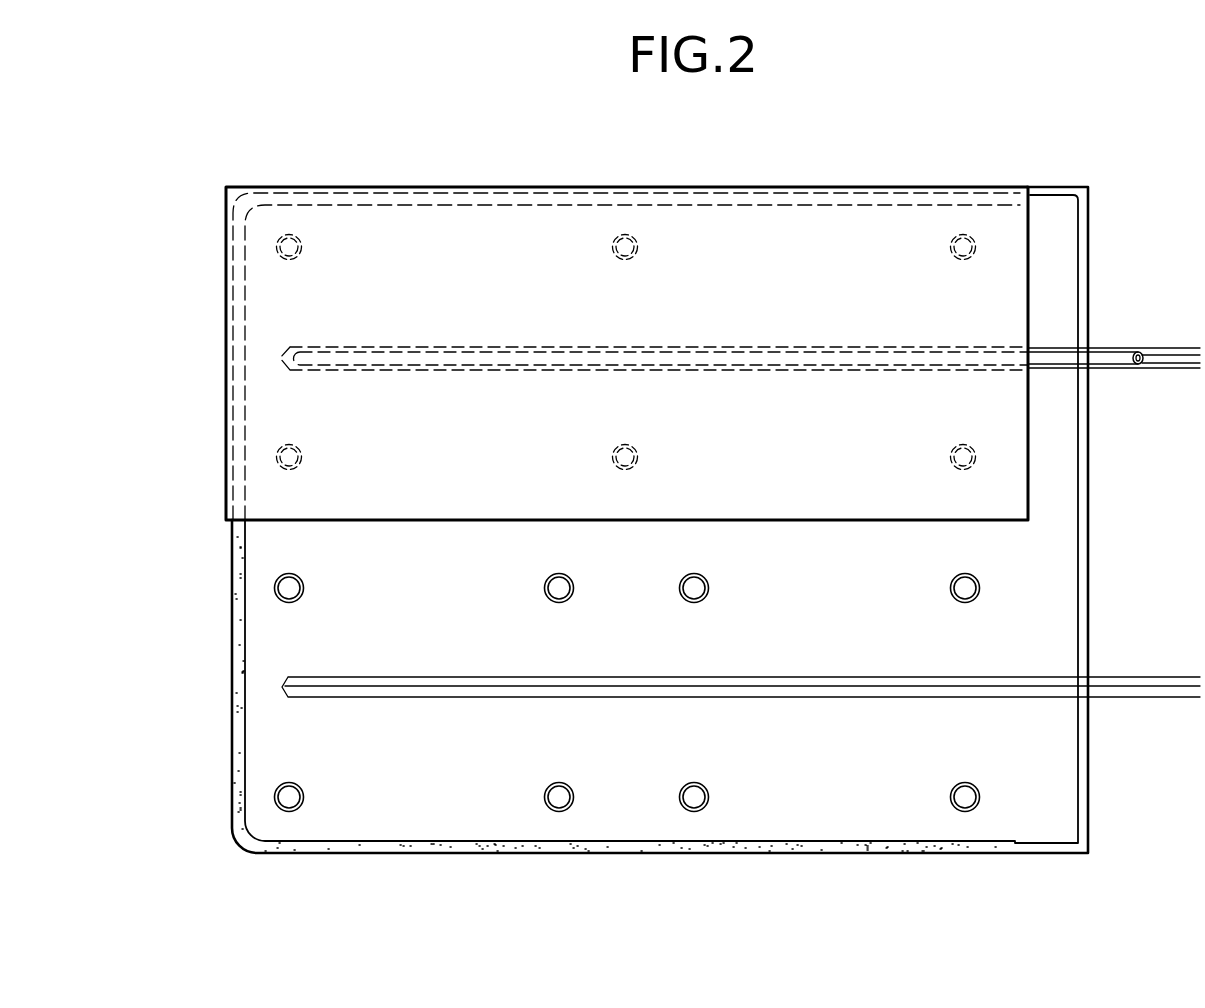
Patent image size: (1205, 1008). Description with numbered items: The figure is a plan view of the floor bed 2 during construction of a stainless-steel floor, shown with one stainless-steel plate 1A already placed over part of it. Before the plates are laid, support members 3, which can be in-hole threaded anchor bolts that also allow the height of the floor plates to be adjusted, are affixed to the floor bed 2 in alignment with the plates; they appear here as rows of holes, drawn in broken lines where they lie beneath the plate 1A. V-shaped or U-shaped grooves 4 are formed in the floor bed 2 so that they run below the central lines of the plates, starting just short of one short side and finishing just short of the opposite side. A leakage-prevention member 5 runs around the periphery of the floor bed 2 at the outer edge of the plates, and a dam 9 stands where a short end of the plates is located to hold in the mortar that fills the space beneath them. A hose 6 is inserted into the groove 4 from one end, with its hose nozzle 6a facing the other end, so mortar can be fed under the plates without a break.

The stainless-steel plate 1A is at (740, 245).
The floor bed 2 is at (322, 543).
The support members 3 is at (618, 257).
The grooves 4 is at (1166, 349).
The leakage-prevention member 5 is at (510, 199).
The hose 6 is at (1117, 358).
The hose nozzle 6a is at (312, 360).
The dam 9 is at (1080, 587).